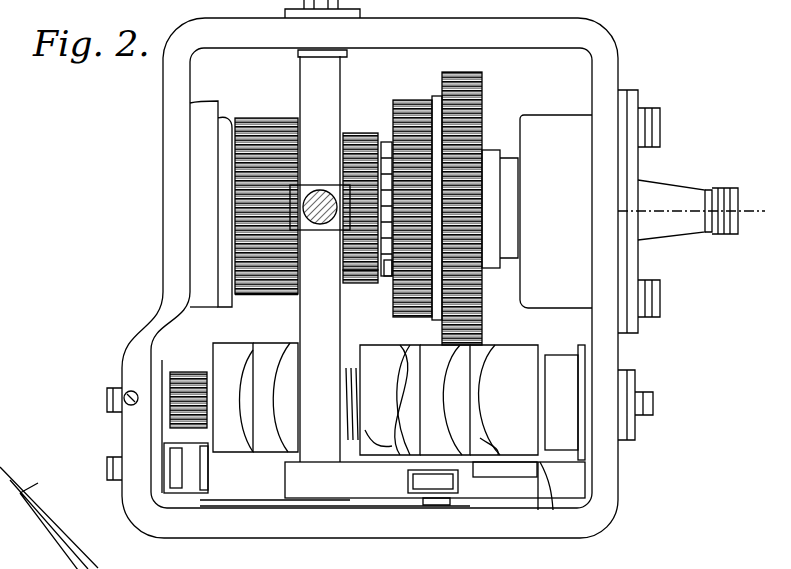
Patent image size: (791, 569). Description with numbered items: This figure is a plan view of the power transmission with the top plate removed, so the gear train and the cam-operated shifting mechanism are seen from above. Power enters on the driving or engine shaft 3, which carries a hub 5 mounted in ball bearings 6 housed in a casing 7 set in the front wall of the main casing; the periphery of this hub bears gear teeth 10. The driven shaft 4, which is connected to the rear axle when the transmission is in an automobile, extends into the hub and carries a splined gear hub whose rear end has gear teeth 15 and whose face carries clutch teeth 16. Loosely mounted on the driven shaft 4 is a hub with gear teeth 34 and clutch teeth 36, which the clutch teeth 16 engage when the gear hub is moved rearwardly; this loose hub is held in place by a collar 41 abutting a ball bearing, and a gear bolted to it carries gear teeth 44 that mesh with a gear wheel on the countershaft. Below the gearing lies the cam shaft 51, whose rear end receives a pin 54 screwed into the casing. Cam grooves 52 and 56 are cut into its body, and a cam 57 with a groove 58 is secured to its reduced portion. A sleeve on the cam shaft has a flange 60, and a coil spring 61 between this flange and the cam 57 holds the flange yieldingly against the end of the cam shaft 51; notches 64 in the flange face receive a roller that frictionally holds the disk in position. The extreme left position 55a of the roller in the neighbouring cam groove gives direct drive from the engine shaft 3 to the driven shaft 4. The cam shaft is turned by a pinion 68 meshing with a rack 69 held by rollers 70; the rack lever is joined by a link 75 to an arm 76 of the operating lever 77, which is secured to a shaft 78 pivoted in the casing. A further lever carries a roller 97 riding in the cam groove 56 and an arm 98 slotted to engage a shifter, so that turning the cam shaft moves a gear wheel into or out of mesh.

The driving or engine shaft 3 is at (600, 485).
The driven shaft 4 is at (682, 188).
The hub 5 is at (582, 552).
The ball bearings 6 is at (653, 402).
The casing 7 is at (620, 88).
The gear teeth 10 is at (251, 119).
The gear teeth 15 is at (356, 132).
The clutch teeth 16 is at (388, 140).
The gear teeth 34 is at (418, 100).
The clutch teeth 36 is at (390, 280).
The collar 41 is at (514, 188).
The gear teeth 44 is at (458, 72).
The cam shaft 51 is at (445, 400).
The cam groove 52 is at (565, 402).
The pin 54 is at (641, 392).
The extreme left position of the cam 55a is at (406, 400).
The cam groove 56 is at (504, 400).
The cam 57 is at (222, 344).
The groove 58 is at (270, 397).
The flange 60 is at (372, 345).
The coil spring 61 is at (350, 365).
The notches 64 is at (385, 436).
The pinion 68 is at (184, 423).
The rack 69 is at (186, 462).
The rollers 70 is at (190, 492).
The link 75 is at (460, 484).
The arm 76 is at (378, 498).
The operating lever 77 is at (322, 218).
The shaft 78 is at (300, 76).
The roller 97 is at (478, 438).
The arm 98 is at (513, 478).